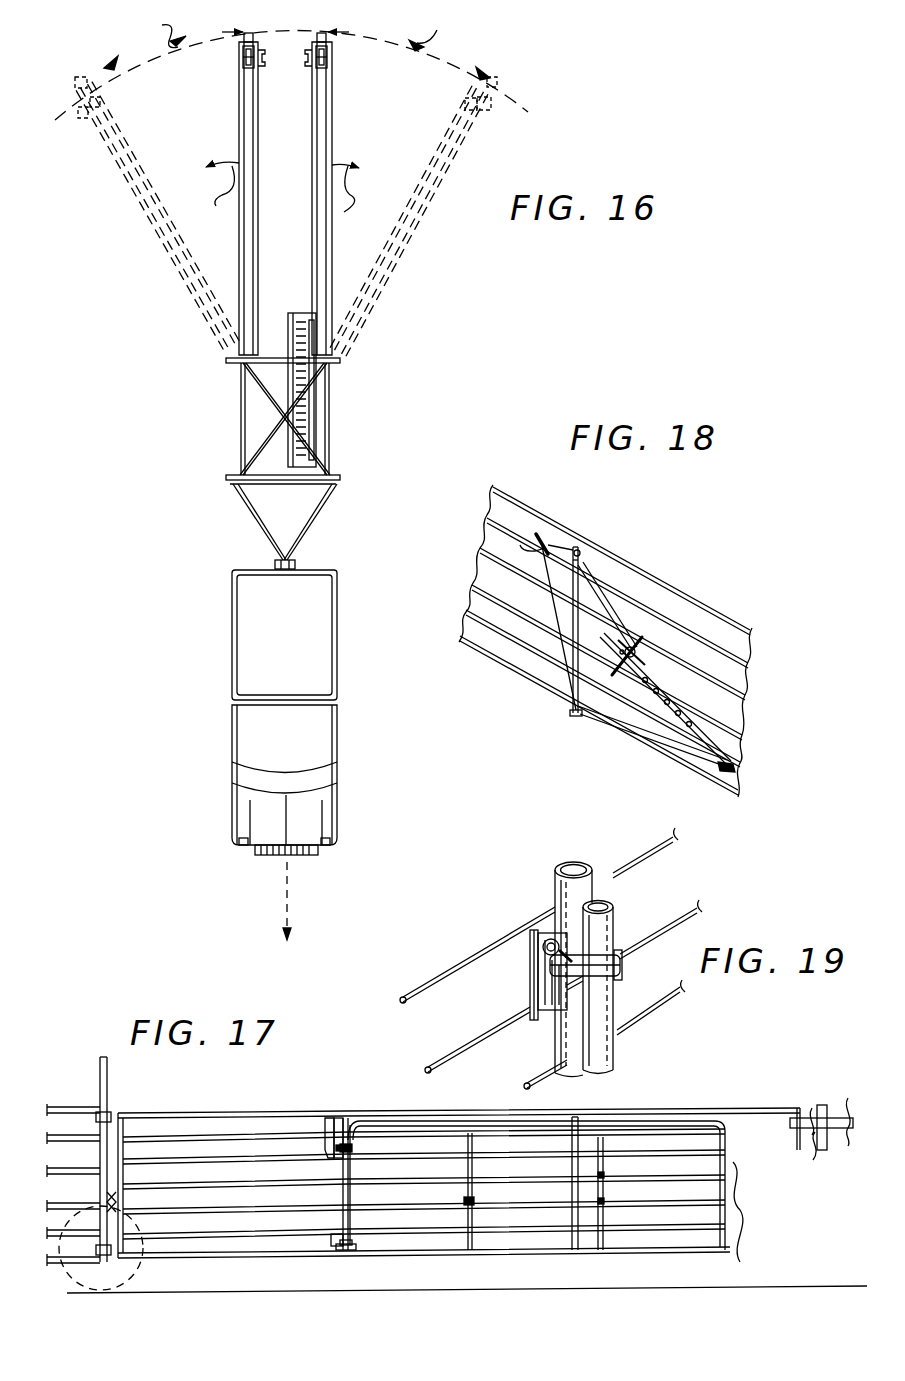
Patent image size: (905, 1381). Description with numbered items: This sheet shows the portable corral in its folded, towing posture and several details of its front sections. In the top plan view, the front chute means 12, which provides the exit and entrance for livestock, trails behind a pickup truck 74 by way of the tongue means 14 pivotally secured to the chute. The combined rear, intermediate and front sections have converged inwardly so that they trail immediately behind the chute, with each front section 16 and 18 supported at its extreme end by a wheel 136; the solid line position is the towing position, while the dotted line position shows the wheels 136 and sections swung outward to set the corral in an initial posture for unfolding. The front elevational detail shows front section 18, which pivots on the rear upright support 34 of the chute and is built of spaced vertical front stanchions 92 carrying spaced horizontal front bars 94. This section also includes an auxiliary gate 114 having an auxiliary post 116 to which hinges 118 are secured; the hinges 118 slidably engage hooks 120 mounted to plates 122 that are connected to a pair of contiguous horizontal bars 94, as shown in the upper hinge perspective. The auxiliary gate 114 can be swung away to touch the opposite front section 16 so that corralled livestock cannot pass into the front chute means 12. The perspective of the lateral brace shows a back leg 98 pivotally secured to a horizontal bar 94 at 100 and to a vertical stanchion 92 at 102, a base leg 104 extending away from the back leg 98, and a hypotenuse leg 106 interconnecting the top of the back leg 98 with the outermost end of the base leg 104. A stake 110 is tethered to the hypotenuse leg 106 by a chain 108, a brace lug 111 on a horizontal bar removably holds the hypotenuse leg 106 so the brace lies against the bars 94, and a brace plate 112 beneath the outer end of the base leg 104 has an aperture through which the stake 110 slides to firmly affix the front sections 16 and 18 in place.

In FIG. 16, the front chute means 12 is at (338, 430).
In FIG. 16, the tongue means 14 is at (314, 533).
In FIG. 16, the pickup truck 74 is at (290, 600).
In FIG. 16, the wheel 136 is at (250, 33).
In FIG. 17, the wheel 136 is at (109, 1278).
In FIG. 18, the front section 16 is at (745, 671).
In FIG. 17, the front section 18 is at (715, 1103).
In FIG. 17, the rear upright support 34 is at (818, 1140).
In FIG. 18, the vertical front stanchion 92 is at (581, 569).
In FIG. 19, the vertical front stanchion 92 is at (563, 872).
In FIG. 17, the vertical front stanchion 92 is at (350, 1122).
In FIG. 18, the horizontal front bar 94 is at (545, 546).
In FIG. 19, the horizontal front bar 94 is at (432, 990).
In FIG. 17, the horizontal front bar 94 is at (207, 1140).
In FIG. 18, the back leg 98 is at (563, 627).
In FIG. 18, the pivot connection 100 is at (578, 565).
In FIG. 18, the pivot connection 102 is at (563, 728).
In FIG. 18, the base leg 104 is at (650, 737).
In FIG. 18, the hypotenuse leg 106 is at (612, 628).
In FIG. 18, the chain 108 is at (678, 710).
In FIG. 18, the stake 110 is at (640, 648).
In FIG. 18, the brace lug 111 is at (650, 657).
In FIG. 18, the brace plate 112 is at (740, 790).
In FIG. 17, the auxiliary gate 114 is at (468, 1200).
In FIG. 19, the auxiliary post 116 is at (623, 1000).
In FIG. 17, the auxiliary post 116 is at (350, 1185).
In FIG. 19, the hinge 118 is at (620, 935).
In FIG. 17, the hinge 118 is at (365, 1146).
In FIG. 19, the hook 120 is at (563, 977).
In FIG. 17, the hook 120 is at (333, 1116).
In FIG. 19, the plate 122 is at (570, 985).
In FIG. 17, the plate 122 is at (330, 1157).